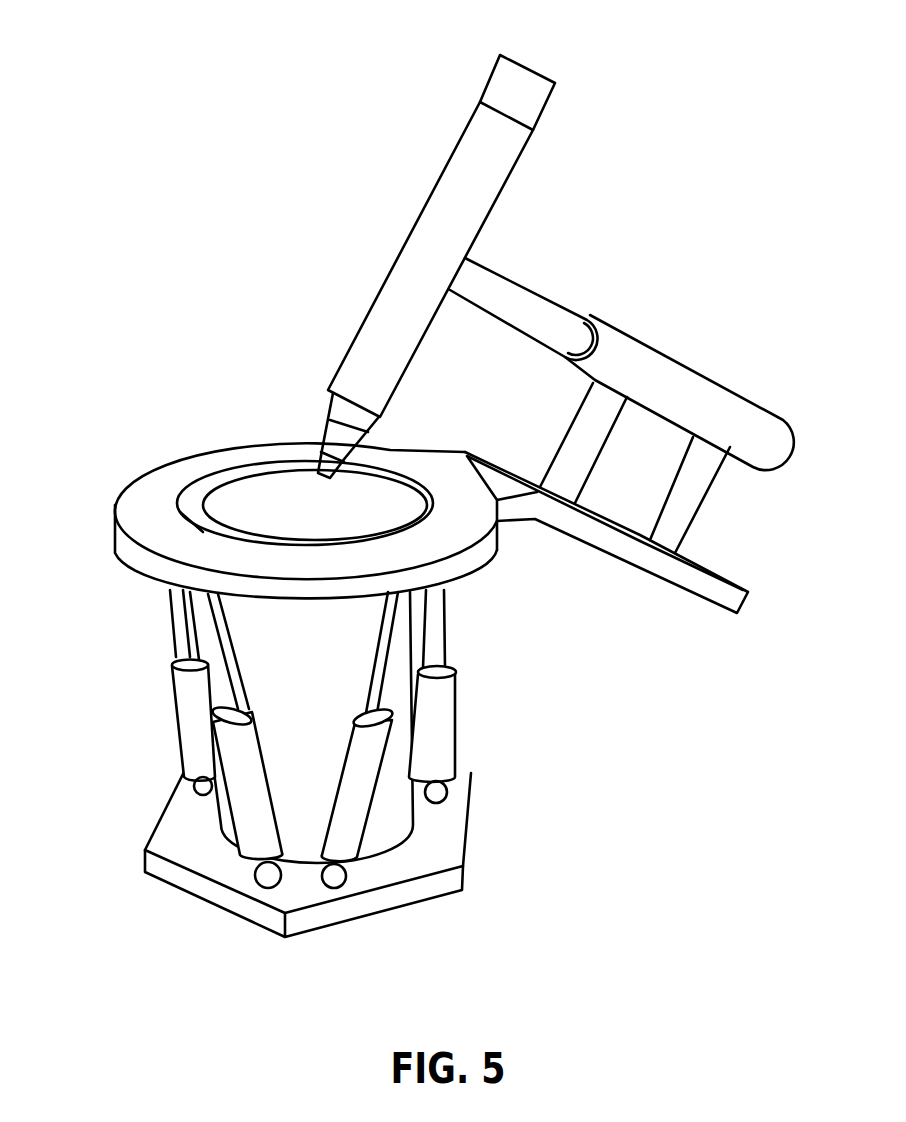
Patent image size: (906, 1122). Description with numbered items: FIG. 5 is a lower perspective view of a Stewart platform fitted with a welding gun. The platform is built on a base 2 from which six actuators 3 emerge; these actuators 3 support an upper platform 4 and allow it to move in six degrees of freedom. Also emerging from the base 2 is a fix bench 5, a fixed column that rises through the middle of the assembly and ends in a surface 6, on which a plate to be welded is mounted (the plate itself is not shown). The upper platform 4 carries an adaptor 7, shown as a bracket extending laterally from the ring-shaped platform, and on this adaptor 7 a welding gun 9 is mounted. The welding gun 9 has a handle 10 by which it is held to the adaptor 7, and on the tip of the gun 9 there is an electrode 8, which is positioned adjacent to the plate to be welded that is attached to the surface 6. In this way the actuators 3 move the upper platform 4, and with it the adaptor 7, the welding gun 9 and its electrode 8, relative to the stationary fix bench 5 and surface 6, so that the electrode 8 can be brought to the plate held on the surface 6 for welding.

The base 2 is at (212, 848).
The actuators 3 is at (200, 727).
The upper platform 4 is at (155, 503).
The fix bench 5 is at (303, 693).
The surface 6 is at (247, 503).
The adaptor 7 is at (648, 557).
The electrode 8 is at (320, 476).
The welding gun 9 is at (440, 258).
The handle 10 is at (682, 383).